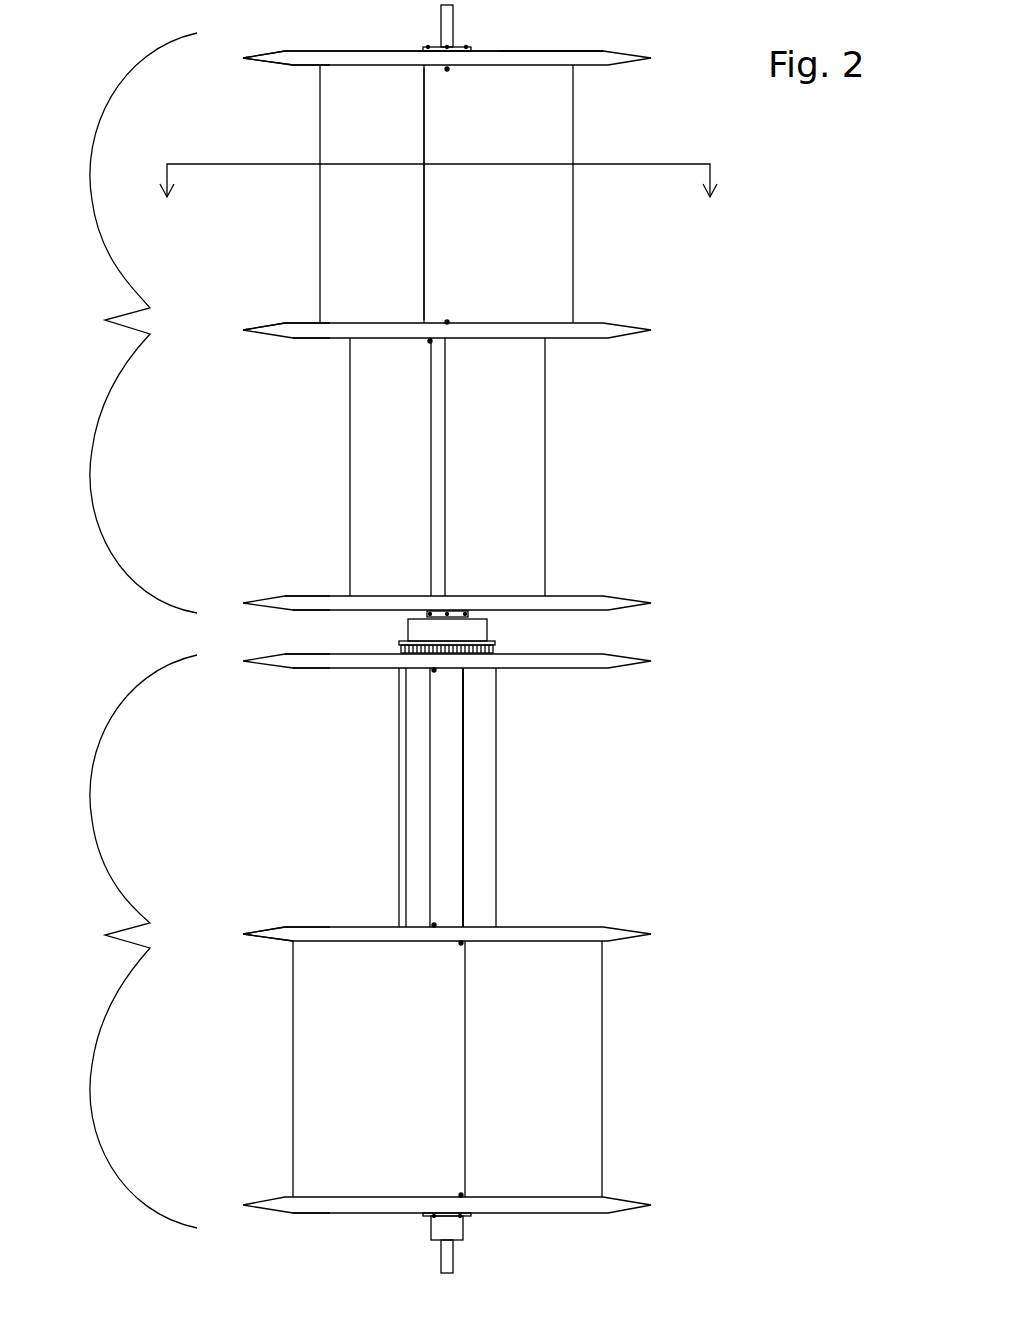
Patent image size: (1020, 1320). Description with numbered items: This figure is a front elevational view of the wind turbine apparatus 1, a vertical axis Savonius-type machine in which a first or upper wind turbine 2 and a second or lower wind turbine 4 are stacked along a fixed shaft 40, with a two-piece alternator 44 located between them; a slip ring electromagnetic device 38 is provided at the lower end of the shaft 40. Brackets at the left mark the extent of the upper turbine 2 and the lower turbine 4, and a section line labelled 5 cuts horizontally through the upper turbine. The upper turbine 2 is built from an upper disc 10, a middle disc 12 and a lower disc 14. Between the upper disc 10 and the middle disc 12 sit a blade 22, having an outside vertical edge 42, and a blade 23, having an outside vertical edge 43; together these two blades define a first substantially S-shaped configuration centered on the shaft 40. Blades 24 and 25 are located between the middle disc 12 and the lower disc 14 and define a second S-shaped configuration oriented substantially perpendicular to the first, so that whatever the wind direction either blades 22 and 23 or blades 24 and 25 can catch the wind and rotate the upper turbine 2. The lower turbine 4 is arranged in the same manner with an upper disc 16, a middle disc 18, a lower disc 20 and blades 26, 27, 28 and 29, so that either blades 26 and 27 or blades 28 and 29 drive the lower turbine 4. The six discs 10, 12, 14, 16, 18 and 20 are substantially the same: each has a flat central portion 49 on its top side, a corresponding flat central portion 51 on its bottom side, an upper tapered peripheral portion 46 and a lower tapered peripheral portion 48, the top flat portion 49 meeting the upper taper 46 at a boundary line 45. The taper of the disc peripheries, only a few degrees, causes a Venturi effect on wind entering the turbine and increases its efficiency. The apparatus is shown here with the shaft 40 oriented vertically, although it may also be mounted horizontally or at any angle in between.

The wind turbine apparatus 1 is at (644, 43).
The upper wind turbine 2 is at (116, 323).
The lower wind turbine 4 is at (116, 941).
The section line 5- 5 is at (439, 208).
The upper disc 10 is at (605, 68).
The middle disc 12 is at (612, 340).
The lower disc 14 is at (623, 594).
The upper disc 16 is at (612, 670).
The middle disc 18 is at (620, 927).
The lower disc 20 is at (620, 1197).
The blade 22 is at (540, 190).
The blade 23 is at (350, 168).
The blade 24 is at (505, 413).
The blade 25 is at (370, 418).
The blade 26 is at (483, 765).
The blade 27 is at (408, 767).
The blade 28 is at (560, 1030).
The blade 29 is at (330, 1030).
The slip ring electromagnetic device 38 is at (431, 1240).
The shaft 40 is at (456, 22).
The outside vertical edge 42 is at (574, 135).
The outside vertical edge 43 is at (319, 133).
The 2-piece alternator 44 is at (488, 631).
The boundary line 45 is at (288, 50).
The upper tapered peripheral portion 46 is at (290, 50).
The lower tapered peripheral portion 48 is at (256, 64).
The flat central portion 49 is at (523, 50).
The flat central portion 51 is at (306, 65).